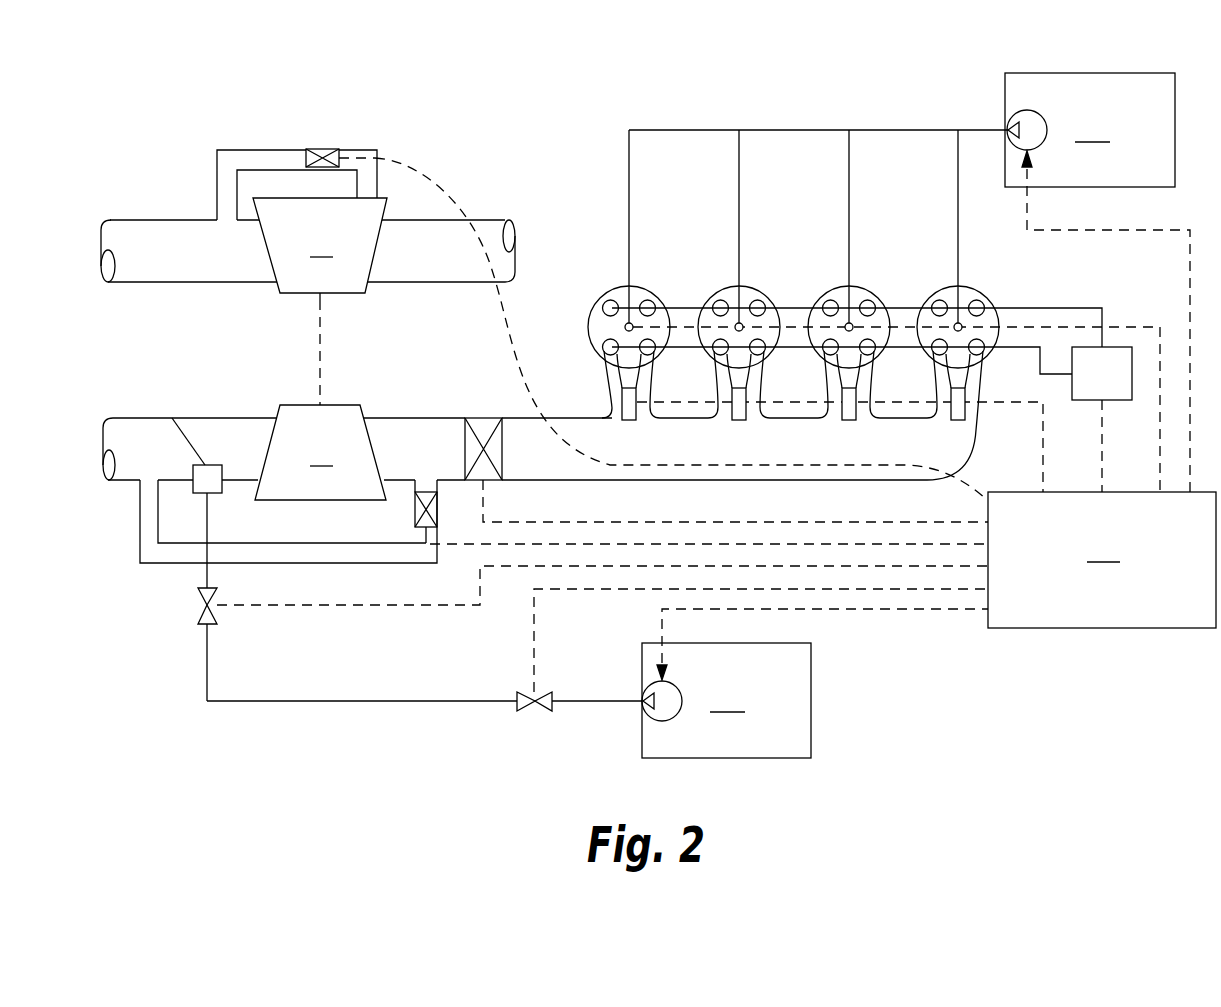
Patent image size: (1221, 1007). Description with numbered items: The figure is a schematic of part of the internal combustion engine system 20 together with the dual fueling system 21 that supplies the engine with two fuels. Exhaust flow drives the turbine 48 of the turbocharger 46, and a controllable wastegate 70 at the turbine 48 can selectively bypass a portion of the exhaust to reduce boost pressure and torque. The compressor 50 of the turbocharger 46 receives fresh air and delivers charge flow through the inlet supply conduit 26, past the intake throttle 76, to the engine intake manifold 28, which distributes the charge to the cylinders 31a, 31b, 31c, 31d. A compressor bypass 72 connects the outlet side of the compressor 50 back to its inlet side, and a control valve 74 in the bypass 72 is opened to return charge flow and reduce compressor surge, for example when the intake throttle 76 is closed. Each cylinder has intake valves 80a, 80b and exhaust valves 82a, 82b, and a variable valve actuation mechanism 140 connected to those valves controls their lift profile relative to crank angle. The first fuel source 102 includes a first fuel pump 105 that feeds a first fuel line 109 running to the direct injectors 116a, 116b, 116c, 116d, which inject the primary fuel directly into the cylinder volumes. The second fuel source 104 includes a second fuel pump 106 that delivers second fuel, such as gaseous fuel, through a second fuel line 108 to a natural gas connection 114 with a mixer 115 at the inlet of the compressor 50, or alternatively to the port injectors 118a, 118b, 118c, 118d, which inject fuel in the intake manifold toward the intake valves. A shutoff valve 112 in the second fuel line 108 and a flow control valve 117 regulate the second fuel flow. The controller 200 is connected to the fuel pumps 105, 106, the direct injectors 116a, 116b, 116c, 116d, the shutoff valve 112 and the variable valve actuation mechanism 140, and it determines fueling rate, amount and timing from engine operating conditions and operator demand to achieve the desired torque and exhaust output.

The internal combustion engine system 20 is at (532, 140).
The fueling system 21 is at (952, 655).
The inlet supply conduit 26 is at (140, 418).
The engine intake manifold 28 is at (712, 482).
The cylinder 31a is at (934, 292).
The cylinder 31b is at (830, 292).
The cylinder 31c is at (720, 292).
The cylinder 31d is at (610, 292).
The turbocharger 46 is at (290, 343).
The turbine 48 is at (308, 245).
The compressor 50 is at (320, 452).
The controllable wastegate 70 is at (322, 149).
The compressor bypass 72 is at (145, 565).
The control valve 74 is at (426, 492).
The intake throttle 76 is at (483, 418).
The intake valve 80a is at (980, 355).
The intake valve 80b is at (933, 352).
The exhaust valve 82a is at (987, 300).
The exhaust valve 82b is at (915, 305).
The first fuel source 102 is at (1090, 130).
The second fuel source 104 is at (726, 700).
The first fuel pump 105 is at (1040, 112).
The second fuel pump 106 is at (652, 718).
The second fuel line 108 is at (380, 703).
The first fuel line 109 is at (790, 130).
The shutoff valve 112 is at (196, 612).
The natural gas connection 114 is at (207, 494).
The mixer 115 is at (172, 418).
The direct injector 116a is at (962, 320).
The direct injector 116b is at (853, 320).
The direct injector 116c is at (743, 320).
The direct injector 116d is at (633, 320).
The flow control valve 117 is at (537, 705).
The port injector 118a is at (951, 392).
The port injector 118b is at (842, 398).
The port injector 118c is at (732, 398).
The port injector 118d is at (622, 398).
The variable valve actuation mechanism 140 is at (1132, 378).
The controller 200 is at (716, 430).